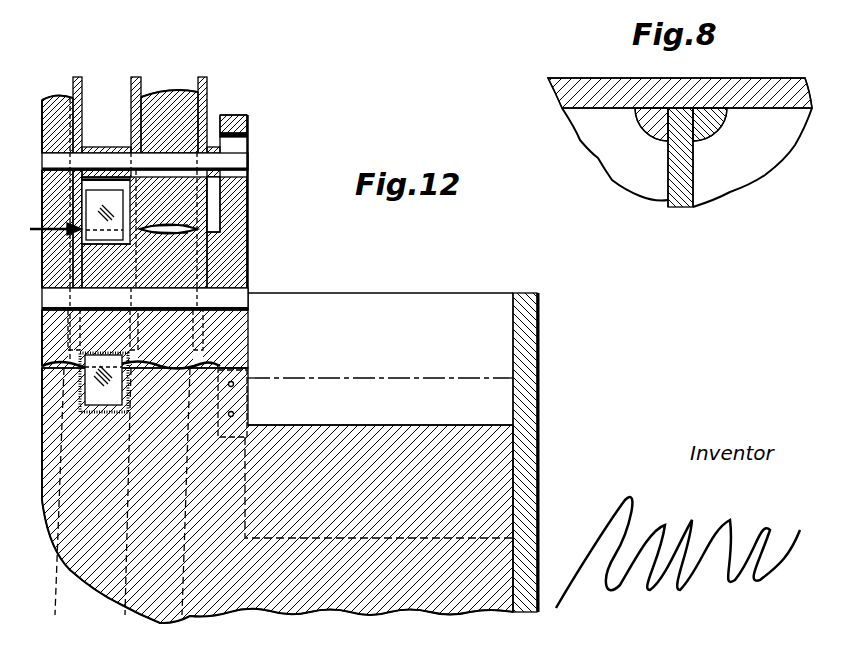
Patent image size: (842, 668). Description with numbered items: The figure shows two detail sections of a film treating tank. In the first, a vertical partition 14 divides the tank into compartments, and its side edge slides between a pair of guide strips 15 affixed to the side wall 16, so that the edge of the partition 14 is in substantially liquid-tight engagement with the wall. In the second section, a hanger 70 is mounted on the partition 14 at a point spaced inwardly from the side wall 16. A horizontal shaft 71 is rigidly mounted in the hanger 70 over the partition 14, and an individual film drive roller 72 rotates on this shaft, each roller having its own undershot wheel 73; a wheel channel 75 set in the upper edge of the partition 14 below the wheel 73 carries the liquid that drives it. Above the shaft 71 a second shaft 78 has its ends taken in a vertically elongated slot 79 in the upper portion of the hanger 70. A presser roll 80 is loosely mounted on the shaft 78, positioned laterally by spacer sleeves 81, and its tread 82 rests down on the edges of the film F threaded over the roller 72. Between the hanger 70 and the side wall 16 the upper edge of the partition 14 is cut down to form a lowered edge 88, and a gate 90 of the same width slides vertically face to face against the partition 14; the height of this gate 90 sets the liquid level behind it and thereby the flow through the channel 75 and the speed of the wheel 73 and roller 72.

In FIG. 12, the vertical partition 14 is at (80, 456).
In FIG. 8, the vertical partition 14 is at (683, 174).
In FIG. 8, the guide strip 15 is at (650, 124).
In FIG. 12, the side wall 16 is at (528, 386).
In FIG. 8, the side wall 16 is at (733, 92).
In FIG. 12, the hanger 70 is at (237, 221).
In FIG. 12, the horizontal shaft 71 is at (230, 300).
In FIG. 12, the film drive roller 72 is at (175, 268).
In FIG. 12, the undershot wheel 73 is at (110, 258).
In FIG. 12, the wheel channel 75 is at (82, 386).
In FIG. 12, the shaft 78 is at (237, 163).
In FIG. 12, the vertically elongated slot 79 is at (237, 145).
In FIG. 12, the presser roll 80 is at (170, 100).
In FIG. 12, the spacer sleeve 81 is at (104, 147).
In FIG. 12, the tread 82 is at (119, 226).
In FIG. 12, the lowered edge 88 is at (434, 425).
In FIG. 12, the gate 90 is at (392, 377).
In FIG. 12, the film F is at (185, 228).